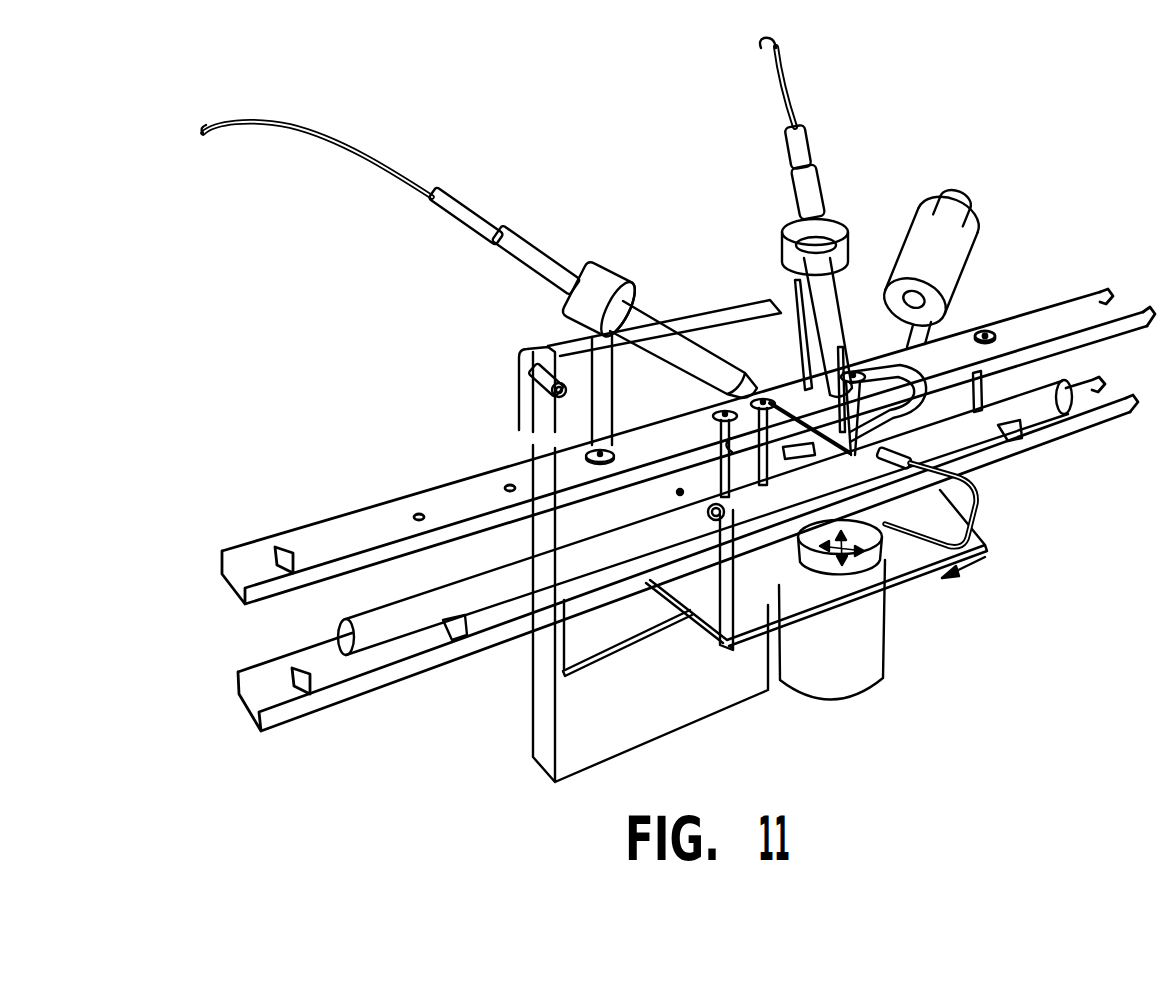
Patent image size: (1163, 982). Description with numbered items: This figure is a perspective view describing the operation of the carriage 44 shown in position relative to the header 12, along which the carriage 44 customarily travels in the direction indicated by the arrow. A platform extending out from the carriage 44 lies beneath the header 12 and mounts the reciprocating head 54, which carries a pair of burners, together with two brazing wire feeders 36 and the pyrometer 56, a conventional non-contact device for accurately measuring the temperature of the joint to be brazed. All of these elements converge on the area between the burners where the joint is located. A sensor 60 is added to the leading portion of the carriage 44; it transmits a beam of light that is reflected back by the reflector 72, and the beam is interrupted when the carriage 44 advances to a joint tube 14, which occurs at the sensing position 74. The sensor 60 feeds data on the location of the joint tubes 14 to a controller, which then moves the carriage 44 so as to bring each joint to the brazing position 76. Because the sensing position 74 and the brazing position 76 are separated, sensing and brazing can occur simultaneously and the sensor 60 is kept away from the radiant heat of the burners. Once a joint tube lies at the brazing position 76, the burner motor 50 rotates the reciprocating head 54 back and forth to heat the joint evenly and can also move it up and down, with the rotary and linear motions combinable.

The header 12 is at (380, 600).
The joint tube 14 is at (597, 520).
The brazing wire feeder 36 is at (788, 190).
The carriage 44 is at (533, 722).
The burner motor 50 is at (885, 660).
The reciprocating head 54 is at (868, 540).
The pyrometer 56 is at (976, 236).
The sensor 60 is at (543, 381).
The reflector 72 is at (728, 590).
The sensing position 74 is at (680, 492).
The brazing position 76 is at (917, 470).